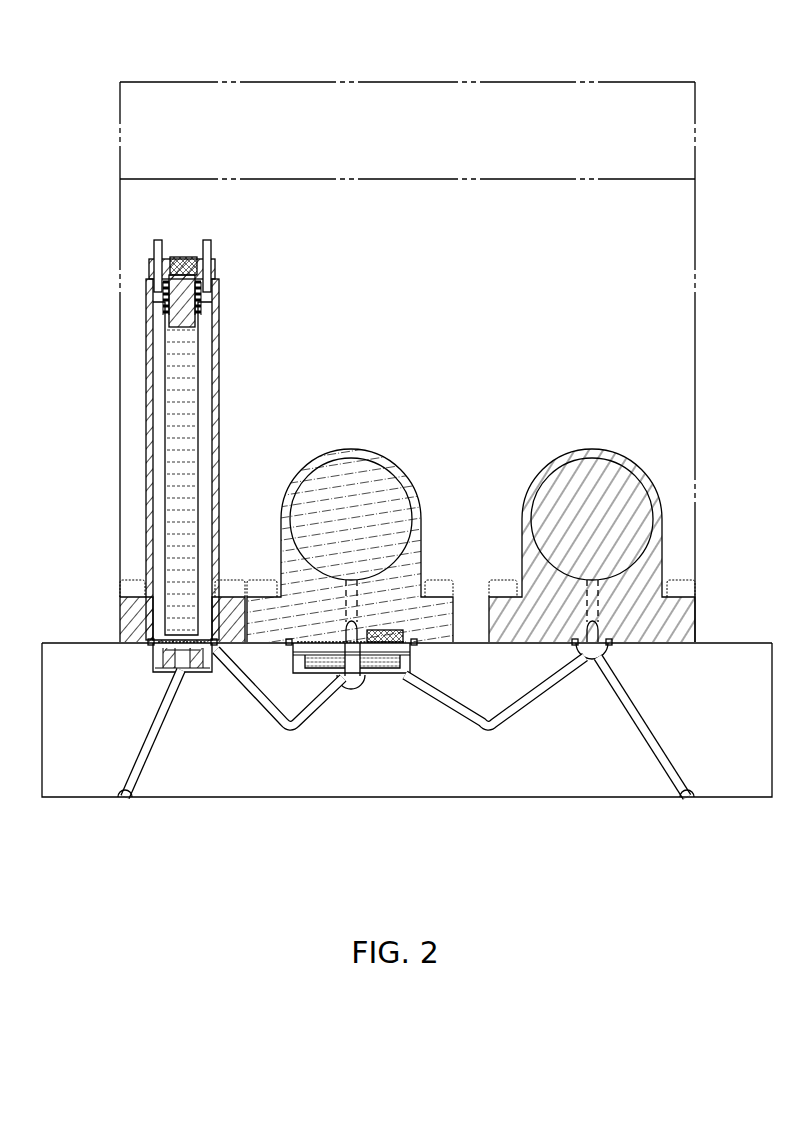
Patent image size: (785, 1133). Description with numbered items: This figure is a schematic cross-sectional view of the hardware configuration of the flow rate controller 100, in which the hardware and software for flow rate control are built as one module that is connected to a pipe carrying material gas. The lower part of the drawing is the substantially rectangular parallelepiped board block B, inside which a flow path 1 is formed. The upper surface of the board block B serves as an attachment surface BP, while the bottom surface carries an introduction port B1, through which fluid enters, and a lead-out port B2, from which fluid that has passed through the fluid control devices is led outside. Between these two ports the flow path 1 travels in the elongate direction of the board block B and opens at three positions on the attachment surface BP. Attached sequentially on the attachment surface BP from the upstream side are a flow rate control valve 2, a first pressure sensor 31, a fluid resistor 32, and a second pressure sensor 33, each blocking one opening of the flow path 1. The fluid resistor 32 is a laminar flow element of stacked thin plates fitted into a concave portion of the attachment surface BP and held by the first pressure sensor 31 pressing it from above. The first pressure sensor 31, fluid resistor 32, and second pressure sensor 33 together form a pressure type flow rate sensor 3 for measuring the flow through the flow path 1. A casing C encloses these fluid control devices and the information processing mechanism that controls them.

The flow rate controller 100 is at (88, 92).
The casing C is at (695, 238).
The pressure type flow rate sensor 3 is at (485, 392).
The flow rate control valve 2 is at (219, 362).
The first pressure sensor 31 is at (353, 449).
The second pressure sensor 33 is at (592, 449).
The fluid resistor 32 is at (383, 672).
The flow path 1 is at (288, 745).
The board block B is at (465, 803).
The attachment surface BP is at (722, 643).
The introduction port B1 is at (125, 799).
The lead-out port B2 is at (687, 799).